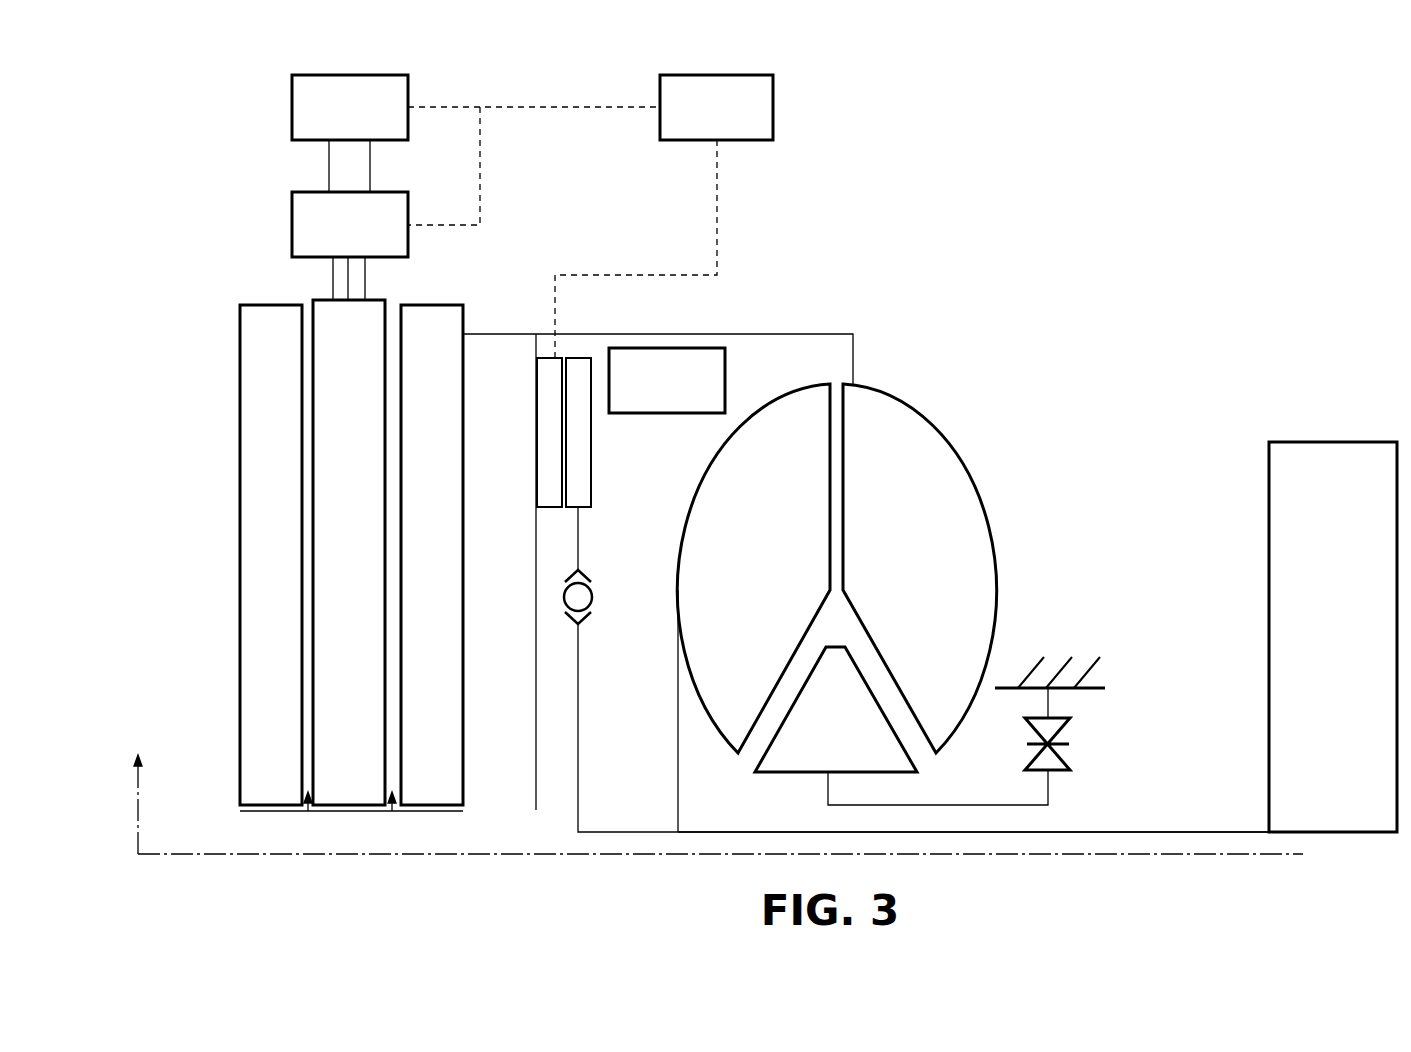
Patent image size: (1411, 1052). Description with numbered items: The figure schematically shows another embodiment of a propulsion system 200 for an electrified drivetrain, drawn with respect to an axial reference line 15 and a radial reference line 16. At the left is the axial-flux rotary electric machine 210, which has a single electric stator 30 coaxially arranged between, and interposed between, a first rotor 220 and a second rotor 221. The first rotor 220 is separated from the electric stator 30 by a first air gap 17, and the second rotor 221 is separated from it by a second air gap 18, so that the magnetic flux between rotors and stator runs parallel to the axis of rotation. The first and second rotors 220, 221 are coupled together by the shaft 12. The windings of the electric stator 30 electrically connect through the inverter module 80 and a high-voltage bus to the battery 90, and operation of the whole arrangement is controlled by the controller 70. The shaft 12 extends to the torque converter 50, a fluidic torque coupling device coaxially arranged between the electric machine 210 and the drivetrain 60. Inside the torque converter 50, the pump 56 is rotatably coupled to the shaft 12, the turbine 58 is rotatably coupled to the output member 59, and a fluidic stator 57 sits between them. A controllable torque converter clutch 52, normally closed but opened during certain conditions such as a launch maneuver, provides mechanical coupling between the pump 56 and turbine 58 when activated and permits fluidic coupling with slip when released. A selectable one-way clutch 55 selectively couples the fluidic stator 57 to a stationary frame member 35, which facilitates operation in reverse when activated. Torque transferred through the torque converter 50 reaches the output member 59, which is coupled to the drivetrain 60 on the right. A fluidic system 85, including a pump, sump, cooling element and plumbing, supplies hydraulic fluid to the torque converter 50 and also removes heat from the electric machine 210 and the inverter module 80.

The propulsion system 200 is at (946, 92).
The axial-flux rotary electric machine 210 is at (197, 343).
The battery 90 is at (350, 107).
The inverter module 80 is at (350, 224).
The controller 70 is at (590, 216).
The shaft 12 is at (797, 334).
The fluidic system 85 is at (667, 380).
The torque converter clutch 52 is at (592, 485).
The torque converter 50 is at (862, 607).
The turbine 58 is at (753, 608).
The pump 56 is at (920, 568).
The fluidic stator 57 is at (901, 726).
The stationary frame member 35 is at (1097, 681).
The selectable one-way clutch 55 is at (1060, 746).
The output member 59 is at (1112, 831).
The drivetrain 60 is at (1333, 637).
The axial reference line 15 is at (1183, 857).
The radial reference line 16 is at (135, 818).
The first rotor 220 is at (273, 811).
The first air gap 17 is at (307, 813).
The electric stator 30 is at (350, 811).
The second air gap 18 is at (392, 813).
The second rotor 221 is at (452, 811).